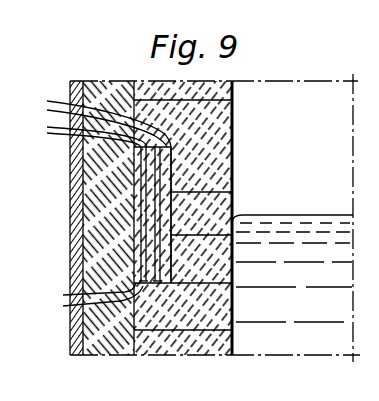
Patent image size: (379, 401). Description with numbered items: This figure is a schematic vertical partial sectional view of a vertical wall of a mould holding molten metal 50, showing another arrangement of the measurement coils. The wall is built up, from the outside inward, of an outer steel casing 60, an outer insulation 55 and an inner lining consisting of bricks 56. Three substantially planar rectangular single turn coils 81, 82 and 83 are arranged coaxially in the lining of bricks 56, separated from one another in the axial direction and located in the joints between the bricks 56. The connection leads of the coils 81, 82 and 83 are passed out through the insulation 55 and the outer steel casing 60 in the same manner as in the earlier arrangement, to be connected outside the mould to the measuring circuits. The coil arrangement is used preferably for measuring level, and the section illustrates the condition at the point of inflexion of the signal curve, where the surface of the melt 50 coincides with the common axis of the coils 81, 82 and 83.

The molten metal 50 is at (285, 213).
The outer insulation 55 is at (106, 338).
The bricks 56 is at (233, 113).
The outer steel casing 60 is at (84, 196).
The coil 81 is at (160, 240).
The coil 82 is at (172, 203).
The coil 83 is at (147, 212).